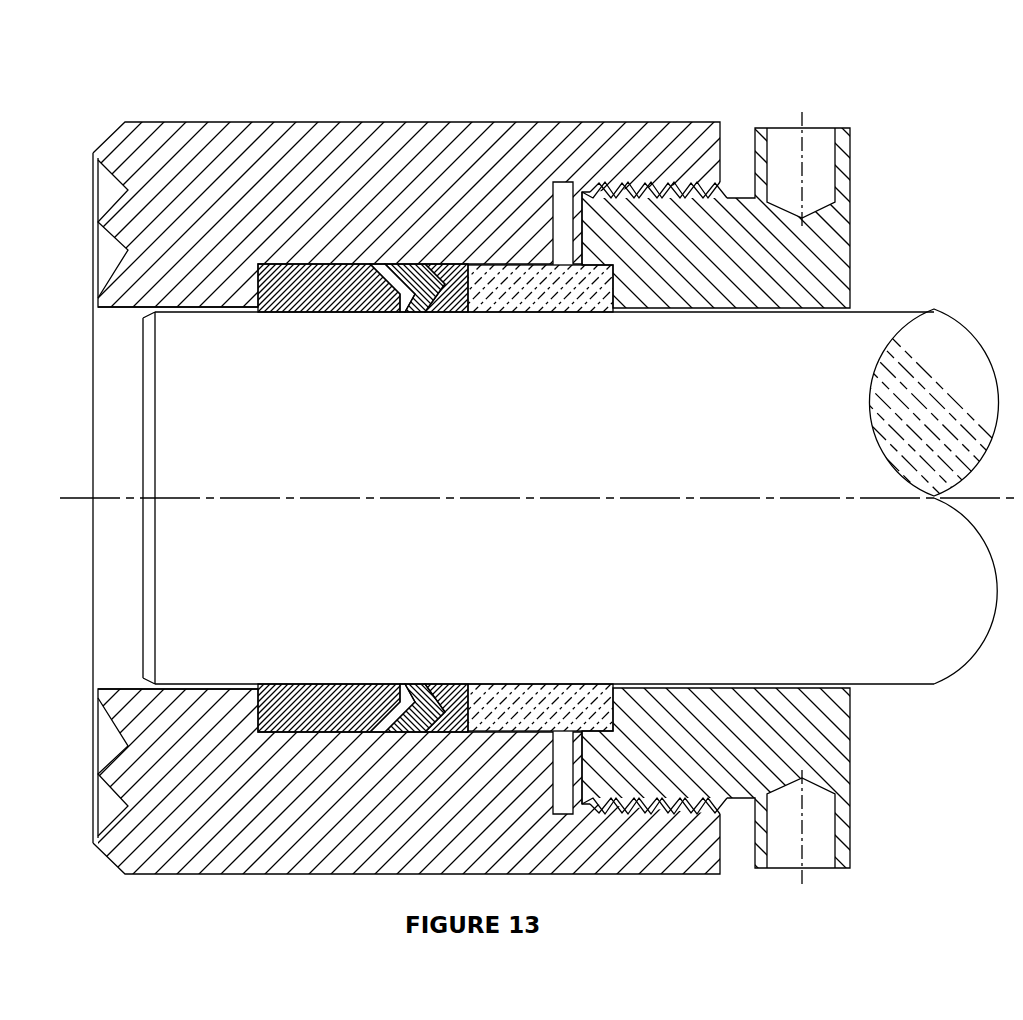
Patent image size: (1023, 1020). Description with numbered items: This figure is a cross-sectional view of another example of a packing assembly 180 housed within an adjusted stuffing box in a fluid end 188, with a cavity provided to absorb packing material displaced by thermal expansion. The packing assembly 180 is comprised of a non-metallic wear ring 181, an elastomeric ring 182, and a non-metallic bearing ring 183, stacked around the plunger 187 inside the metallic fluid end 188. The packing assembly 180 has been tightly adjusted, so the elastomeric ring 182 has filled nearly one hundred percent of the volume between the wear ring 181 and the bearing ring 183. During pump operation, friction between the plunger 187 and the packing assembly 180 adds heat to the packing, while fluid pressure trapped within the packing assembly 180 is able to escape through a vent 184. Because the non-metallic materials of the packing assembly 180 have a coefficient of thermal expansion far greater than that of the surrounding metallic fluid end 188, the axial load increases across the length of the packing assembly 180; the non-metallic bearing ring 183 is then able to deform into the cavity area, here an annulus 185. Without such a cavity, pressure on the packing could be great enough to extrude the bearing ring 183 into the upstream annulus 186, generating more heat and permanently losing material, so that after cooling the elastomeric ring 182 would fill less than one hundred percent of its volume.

The packing assembly 180 is at (410, 212).
The non-metallic wear ring 181 is at (463, 277).
The elastomeric ring 182 is at (405, 277).
The non-metallic bearing ring 183 is at (290, 277).
The vent 184 is at (333, 695).
The annulus 185 is at (275, 306).
The upstream annulus 186 is at (217, 304).
The plunger 187 is at (868, 318).
The fluid end 188 is at (383, 132).